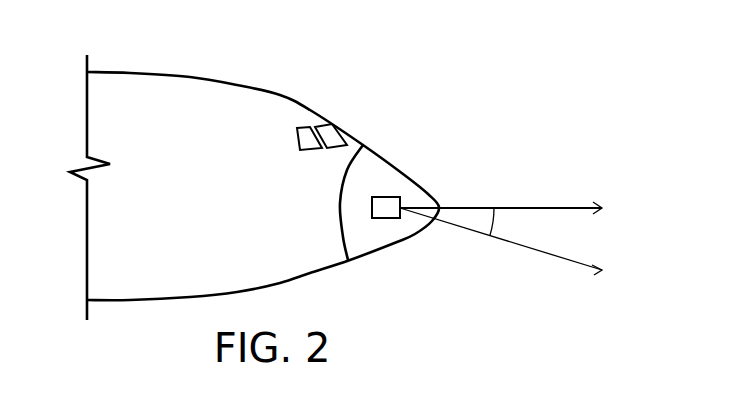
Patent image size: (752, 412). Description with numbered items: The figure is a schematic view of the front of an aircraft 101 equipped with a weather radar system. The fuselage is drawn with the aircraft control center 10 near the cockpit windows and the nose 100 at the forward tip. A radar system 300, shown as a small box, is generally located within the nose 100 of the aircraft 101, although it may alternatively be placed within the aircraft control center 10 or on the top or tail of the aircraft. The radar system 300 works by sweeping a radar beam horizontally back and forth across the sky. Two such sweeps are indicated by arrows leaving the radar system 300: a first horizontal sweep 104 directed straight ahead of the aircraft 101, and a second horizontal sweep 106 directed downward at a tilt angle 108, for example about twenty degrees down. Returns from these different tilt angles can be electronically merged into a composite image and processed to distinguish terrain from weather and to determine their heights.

The aircraft 101 is at (425, 57).
The aircraft control center 10 is at (297, 118).
The nose 100 is at (365, 162).
The radar system 300 is at (373, 212).
The first horizontal sweep 104 is at (573, 207).
The second horizontal sweep 106 is at (540, 253).
The tilt angle 108 is at (499, 207).